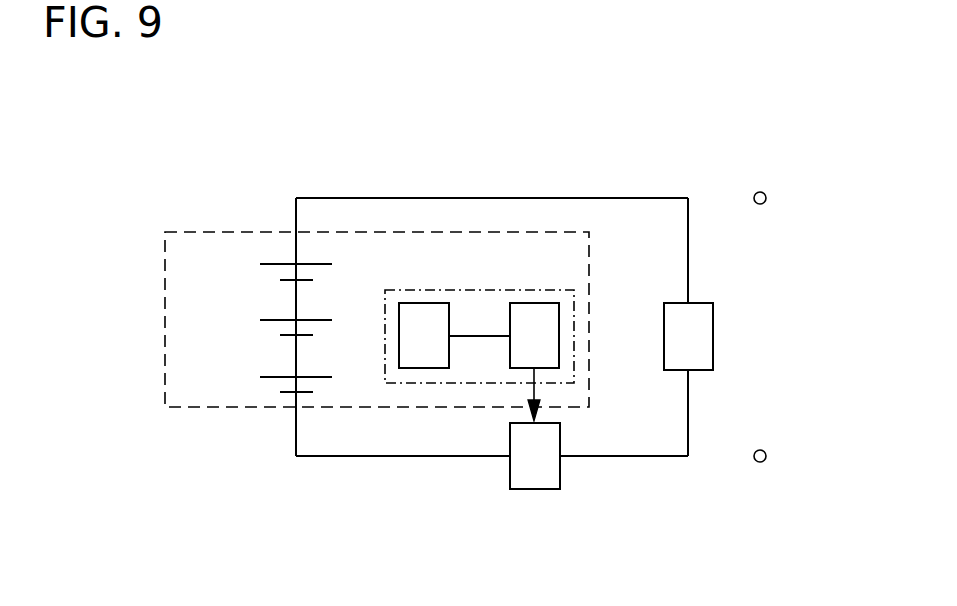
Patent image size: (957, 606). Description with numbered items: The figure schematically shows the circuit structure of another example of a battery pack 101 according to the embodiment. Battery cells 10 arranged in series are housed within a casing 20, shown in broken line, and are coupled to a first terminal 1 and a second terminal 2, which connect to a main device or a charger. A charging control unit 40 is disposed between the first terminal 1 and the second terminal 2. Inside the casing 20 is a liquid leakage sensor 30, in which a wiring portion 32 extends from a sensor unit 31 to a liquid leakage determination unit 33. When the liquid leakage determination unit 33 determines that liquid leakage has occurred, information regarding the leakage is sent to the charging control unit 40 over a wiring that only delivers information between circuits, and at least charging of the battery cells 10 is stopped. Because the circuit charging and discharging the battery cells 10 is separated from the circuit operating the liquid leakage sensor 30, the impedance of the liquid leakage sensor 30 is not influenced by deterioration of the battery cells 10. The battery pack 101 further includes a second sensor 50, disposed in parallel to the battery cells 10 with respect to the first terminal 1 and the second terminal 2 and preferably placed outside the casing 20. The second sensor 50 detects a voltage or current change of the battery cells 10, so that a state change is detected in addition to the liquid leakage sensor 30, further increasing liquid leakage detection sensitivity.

The battery pack 101 is at (627, 164).
The casing 20 is at (240, 230).
The battery cells 10 is at (252, 383).
The liquid leakage sensor 30 is at (574, 290).
The sensor unit 31 is at (424, 320).
The wiring portion 32 is at (484, 333).
The liquid leakage determination unit 33 is at (539, 320).
The charging control unit 40 is at (534, 490).
The second sensor 50 is at (714, 331).
The first terminal 1 is at (766, 198).
The second terminal 2 is at (766, 456).